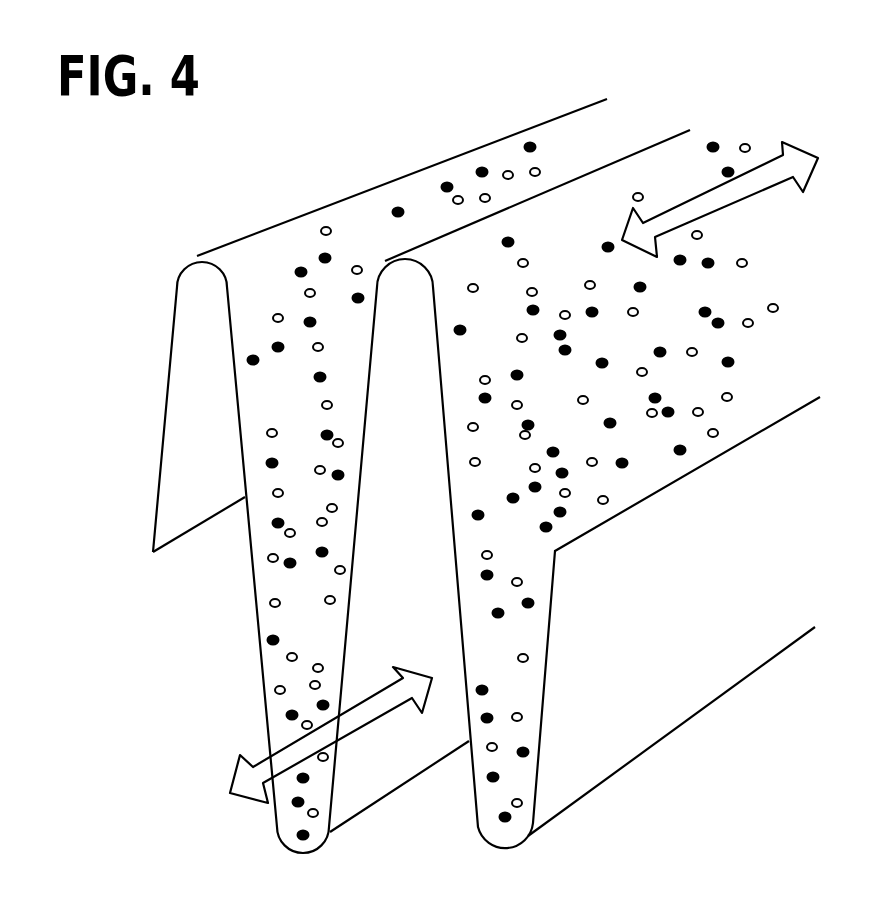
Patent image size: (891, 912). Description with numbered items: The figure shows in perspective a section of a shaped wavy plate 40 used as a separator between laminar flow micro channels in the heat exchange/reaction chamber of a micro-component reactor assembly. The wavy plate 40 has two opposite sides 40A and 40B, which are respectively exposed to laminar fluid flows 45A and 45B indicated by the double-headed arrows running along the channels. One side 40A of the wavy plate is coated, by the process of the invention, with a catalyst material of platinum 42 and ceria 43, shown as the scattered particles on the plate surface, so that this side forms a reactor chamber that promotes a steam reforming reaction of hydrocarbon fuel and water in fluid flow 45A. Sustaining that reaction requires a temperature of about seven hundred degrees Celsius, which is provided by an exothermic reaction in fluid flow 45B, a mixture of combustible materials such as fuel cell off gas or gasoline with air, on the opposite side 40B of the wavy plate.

The shaped wavy plate 40 is at (173, 287).
The one side of the wavy plate 40A is at (577, 162).
The opposite side of the wavy plate 40B is at (185, 507).
The platinum 42 is at (327, 226).
The ceria 43 is at (298, 268).
The laminar fluid flow 45A is at (758, 182).
The laminar fluid flow 45B is at (273, 772).